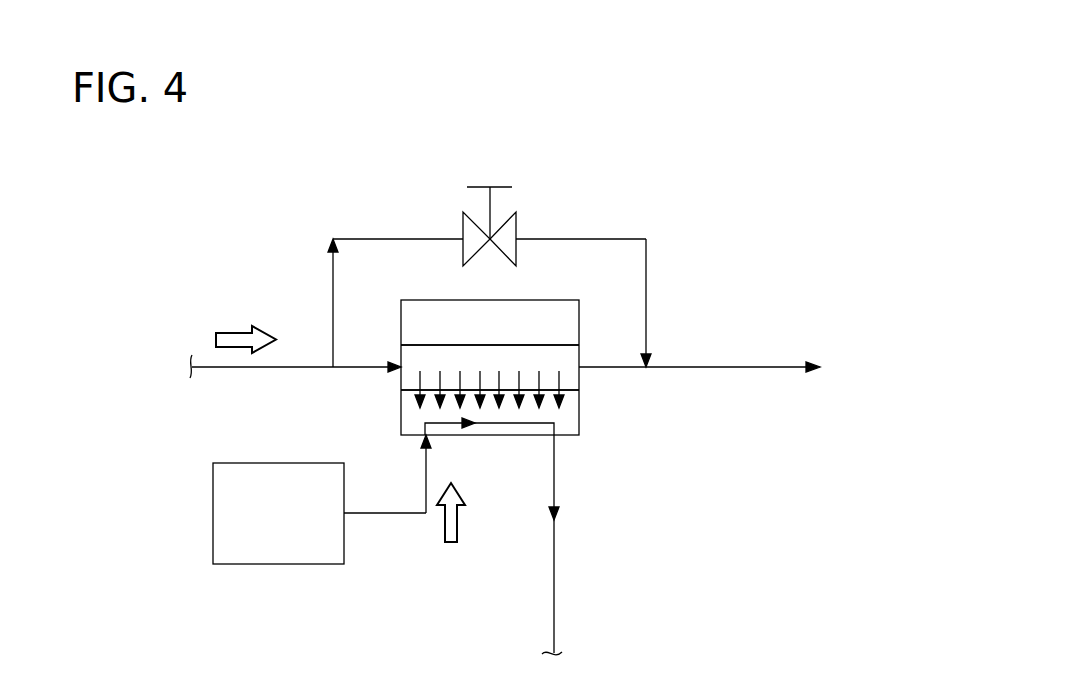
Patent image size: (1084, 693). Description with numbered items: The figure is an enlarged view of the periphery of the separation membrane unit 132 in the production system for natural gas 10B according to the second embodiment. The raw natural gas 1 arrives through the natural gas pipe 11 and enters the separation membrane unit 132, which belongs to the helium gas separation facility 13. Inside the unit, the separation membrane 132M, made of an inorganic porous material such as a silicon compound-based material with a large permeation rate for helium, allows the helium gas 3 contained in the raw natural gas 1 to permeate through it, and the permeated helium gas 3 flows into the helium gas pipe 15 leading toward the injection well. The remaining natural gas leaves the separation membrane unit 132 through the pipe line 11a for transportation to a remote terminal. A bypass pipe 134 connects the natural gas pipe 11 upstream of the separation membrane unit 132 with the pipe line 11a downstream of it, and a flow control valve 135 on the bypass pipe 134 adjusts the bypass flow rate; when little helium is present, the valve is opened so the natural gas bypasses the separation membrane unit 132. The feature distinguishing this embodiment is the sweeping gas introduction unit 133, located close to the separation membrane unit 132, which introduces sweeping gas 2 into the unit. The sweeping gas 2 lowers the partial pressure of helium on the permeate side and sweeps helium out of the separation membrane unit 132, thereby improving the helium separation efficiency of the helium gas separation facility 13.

The production system for natural gas 10B is at (403, 188).
The raw natural gas 1 is at (232, 328).
The sweeping gas 2 is at (460, 527).
The helium gas 3 is at (559, 379).
The natural gas pipe 11 is at (232, 370).
The pipe line 11a is at (762, 370).
The helium gas separation facility 13 is at (384, 592).
The helium gas pipe 15 is at (553, 582).
The separation membrane unit 132 is at (597, 418).
The separation membrane 132M is at (515, 312).
The sweeping gas introduction unit 133 is at (275, 565).
The bypass pipe 134 is at (646, 281).
The flow control valve 135 is at (516, 224).